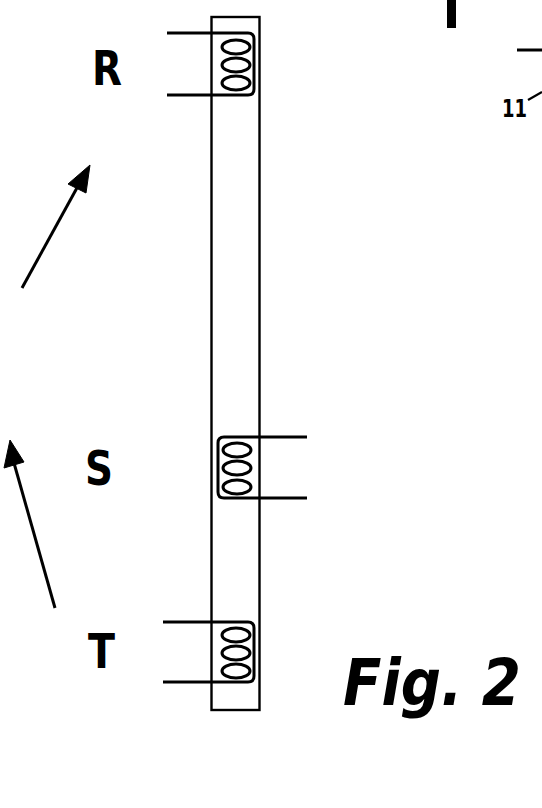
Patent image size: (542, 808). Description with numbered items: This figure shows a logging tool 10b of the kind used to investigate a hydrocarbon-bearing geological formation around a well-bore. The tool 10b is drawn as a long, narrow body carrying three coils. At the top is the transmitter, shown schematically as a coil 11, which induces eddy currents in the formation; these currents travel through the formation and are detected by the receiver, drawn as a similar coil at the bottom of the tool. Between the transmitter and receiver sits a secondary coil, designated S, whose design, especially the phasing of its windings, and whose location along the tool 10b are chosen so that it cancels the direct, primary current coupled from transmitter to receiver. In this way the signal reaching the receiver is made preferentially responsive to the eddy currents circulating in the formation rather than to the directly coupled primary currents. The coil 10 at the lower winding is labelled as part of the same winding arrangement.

The stator winding coil 10 is at (255, 642).
The tool 10b is at (237, 320).
The coil 11 is at (252, 60).